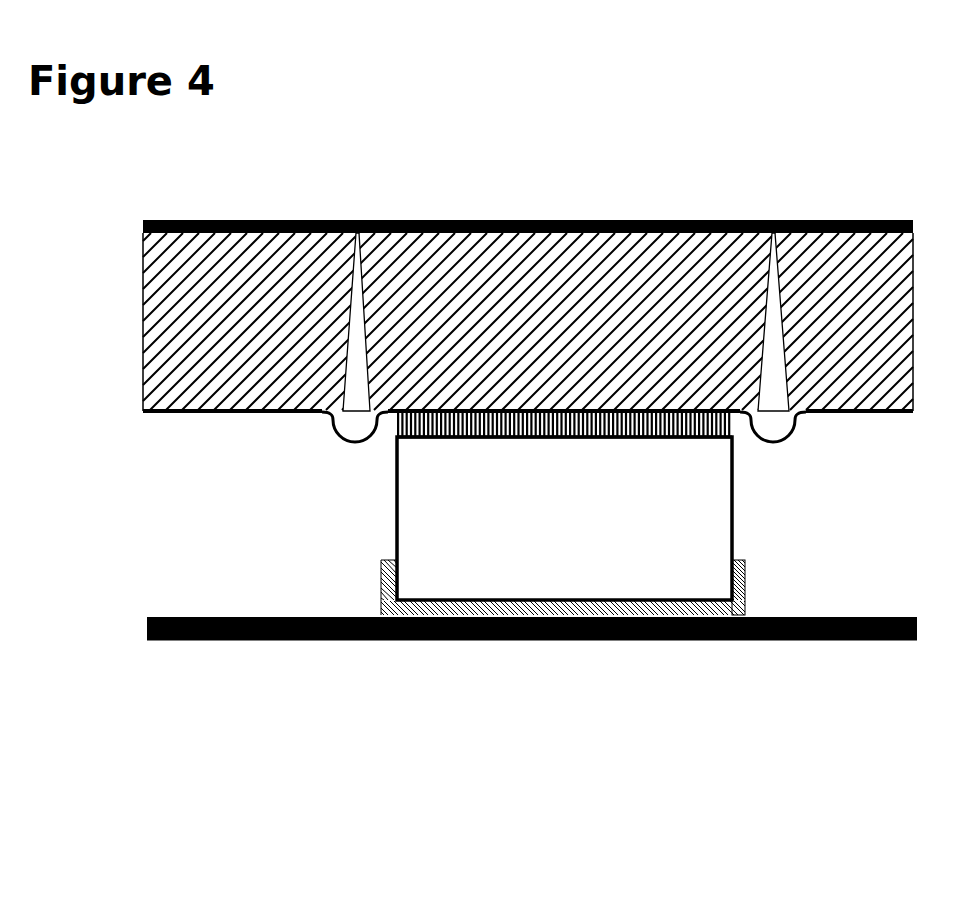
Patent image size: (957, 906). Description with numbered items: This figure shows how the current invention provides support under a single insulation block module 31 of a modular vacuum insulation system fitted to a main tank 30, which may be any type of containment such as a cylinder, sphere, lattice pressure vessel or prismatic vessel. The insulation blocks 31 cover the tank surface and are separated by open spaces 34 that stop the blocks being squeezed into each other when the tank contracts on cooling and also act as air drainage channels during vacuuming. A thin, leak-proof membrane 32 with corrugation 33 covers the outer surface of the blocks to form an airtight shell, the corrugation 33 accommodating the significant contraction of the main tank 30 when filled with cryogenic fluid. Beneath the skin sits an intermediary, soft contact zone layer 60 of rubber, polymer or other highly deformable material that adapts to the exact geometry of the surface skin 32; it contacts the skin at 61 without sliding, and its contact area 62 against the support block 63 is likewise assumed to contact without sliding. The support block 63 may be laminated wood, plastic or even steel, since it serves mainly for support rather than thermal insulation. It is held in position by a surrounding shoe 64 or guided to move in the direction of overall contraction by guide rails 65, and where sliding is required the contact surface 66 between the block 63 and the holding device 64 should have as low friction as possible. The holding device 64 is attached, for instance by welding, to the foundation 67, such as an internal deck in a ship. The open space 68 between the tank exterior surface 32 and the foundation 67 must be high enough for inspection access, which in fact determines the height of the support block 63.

The main tank 30 is at (498, 220).
The insulation block 31 is at (680, 258).
The membrane 32 is at (870, 415).
The corrugation 33 is at (350, 442).
The open space 34 is at (273, 418).
The contact zone layer 60 is at (603, 438).
The contact with surface skin 61 is at (703, 417).
The contact area 62 is at (448, 438).
The support block 63 is at (595, 563).
The shoe 64 is at (487, 638).
The guide rail 65 is at (380, 583).
The contact surface 66 is at (370, 640).
The foundation 67 is at (793, 640).
The open space 68 is at (267, 557).